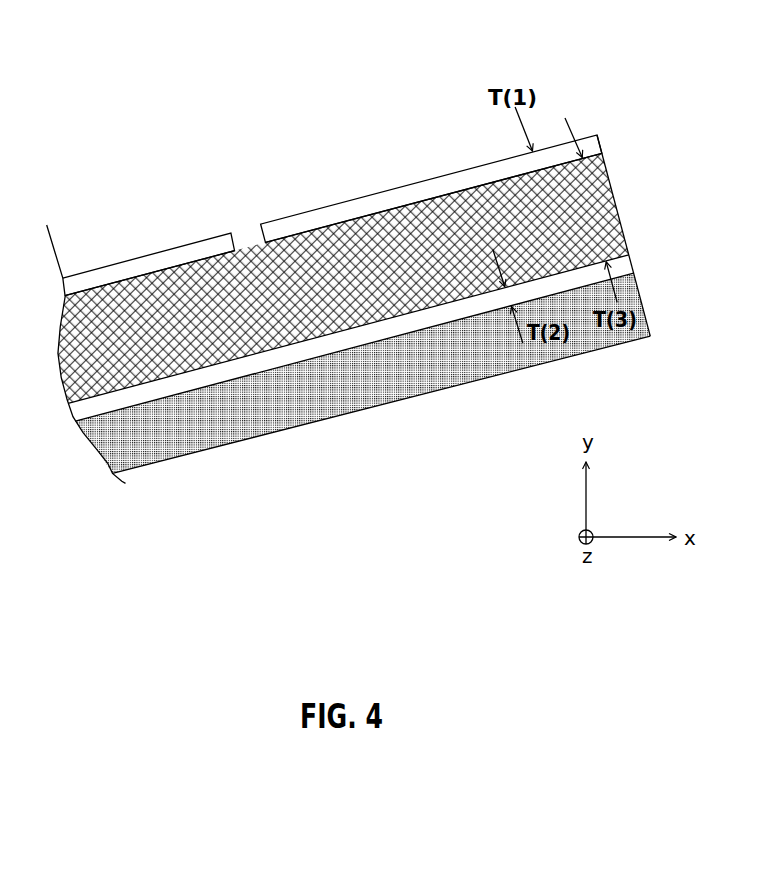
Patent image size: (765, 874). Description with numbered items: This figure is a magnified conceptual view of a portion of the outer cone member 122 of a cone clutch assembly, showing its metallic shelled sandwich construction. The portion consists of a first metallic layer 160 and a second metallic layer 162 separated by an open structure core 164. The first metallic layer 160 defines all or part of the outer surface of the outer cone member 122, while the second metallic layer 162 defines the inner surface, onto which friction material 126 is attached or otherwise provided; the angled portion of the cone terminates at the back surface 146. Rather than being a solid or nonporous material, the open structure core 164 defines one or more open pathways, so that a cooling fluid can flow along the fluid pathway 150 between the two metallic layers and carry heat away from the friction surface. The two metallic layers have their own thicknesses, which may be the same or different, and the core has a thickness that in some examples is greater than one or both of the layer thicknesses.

The outer cone member 122 is at (550, 58).
The friction material 126 is at (445, 360).
The back surface 146 is at (618, 200).
The fluid pathway 150 is at (424, 259).
The first metallic layer 160 is at (177, 257).
The second metallic layer 162 is at (173, 387).
The open structure core 164 is at (452, 213).